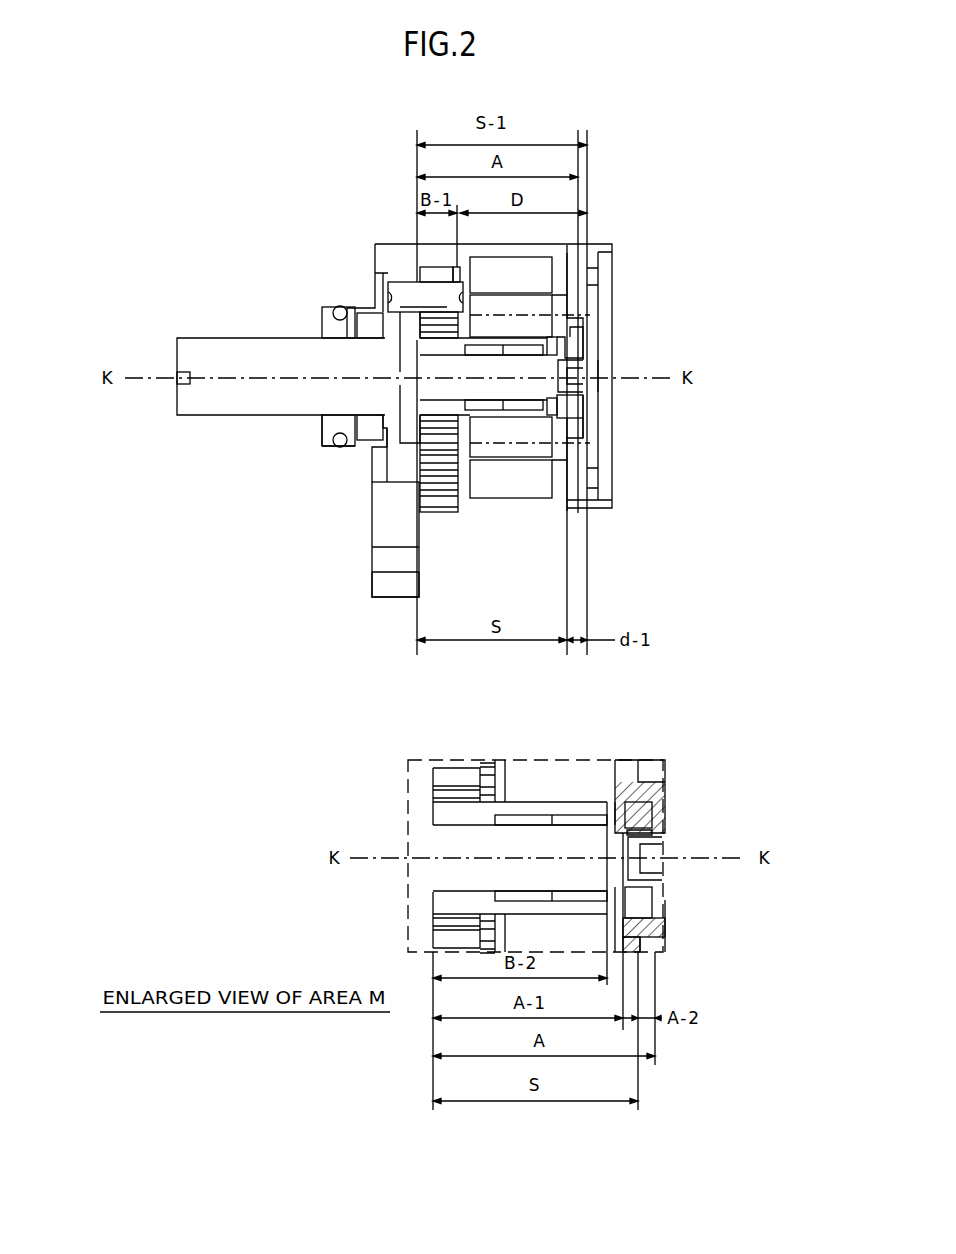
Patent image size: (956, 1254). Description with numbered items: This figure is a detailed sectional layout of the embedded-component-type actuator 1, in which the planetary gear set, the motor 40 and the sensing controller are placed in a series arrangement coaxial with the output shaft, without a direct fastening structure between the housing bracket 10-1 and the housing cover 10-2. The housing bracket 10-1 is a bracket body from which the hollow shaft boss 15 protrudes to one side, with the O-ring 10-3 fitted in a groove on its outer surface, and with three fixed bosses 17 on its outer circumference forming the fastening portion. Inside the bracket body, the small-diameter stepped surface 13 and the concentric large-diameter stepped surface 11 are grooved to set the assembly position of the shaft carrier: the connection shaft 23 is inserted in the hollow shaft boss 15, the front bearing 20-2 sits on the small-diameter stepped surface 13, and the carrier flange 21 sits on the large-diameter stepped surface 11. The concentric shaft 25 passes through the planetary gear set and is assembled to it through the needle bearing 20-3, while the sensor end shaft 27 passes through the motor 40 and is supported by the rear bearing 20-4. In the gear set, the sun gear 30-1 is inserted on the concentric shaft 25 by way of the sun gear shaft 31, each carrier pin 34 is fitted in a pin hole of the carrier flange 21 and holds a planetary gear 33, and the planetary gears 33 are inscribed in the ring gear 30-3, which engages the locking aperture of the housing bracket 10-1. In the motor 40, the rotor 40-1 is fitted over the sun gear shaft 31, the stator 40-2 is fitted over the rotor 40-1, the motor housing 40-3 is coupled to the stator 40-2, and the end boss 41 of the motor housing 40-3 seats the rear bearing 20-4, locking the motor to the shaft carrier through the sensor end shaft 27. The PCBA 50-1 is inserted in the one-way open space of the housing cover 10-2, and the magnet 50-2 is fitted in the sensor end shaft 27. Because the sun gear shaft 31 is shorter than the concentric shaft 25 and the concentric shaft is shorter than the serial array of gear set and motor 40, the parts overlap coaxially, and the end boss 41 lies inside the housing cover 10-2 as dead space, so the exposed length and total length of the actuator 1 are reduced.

The actuator 1 is at (640, 313).
The housing bracket 10-1 is at (385, 528).
The housing cover 10-2 is at (612, 492).
The O-ring 10-3 is at (337, 443).
The large-diameter stepped surface 11 is at (380, 267).
The small-diameter stepped surface 13 is at (367, 308).
The hollow shaft boss 15 is at (330, 320).
The fixed boss 17 is at (393, 587).
The front bearing 20-2 is at (370, 433).
The needle bearing 20-3 is at (525, 405).
The rear bearing 20-4 is at (567, 410).
The carrier flange 21 is at (402, 467).
The connection shaft 23 is at (202, 402).
The concentric shaft 25 is at (492, 392).
The sensor end shaft 27 is at (580, 357).
The sun gear 30-1 is at (462, 812).
The ring gear 30-3 is at (443, 502).
The sun gear shaft 31 is at (528, 808).
The planetary gear 33 is at (438, 280).
The carrier pin 34 is at (417, 288).
The motor 40 is at (632, 943).
The rotor 40-1 is at (533, 313).
The stator 40-2 is at (533, 278).
The motor housing 40-3 is at (557, 260).
The end boss 41 is at (573, 415).
The PCBA 50-1 is at (595, 405).
The magnet 50-2 is at (572, 372).